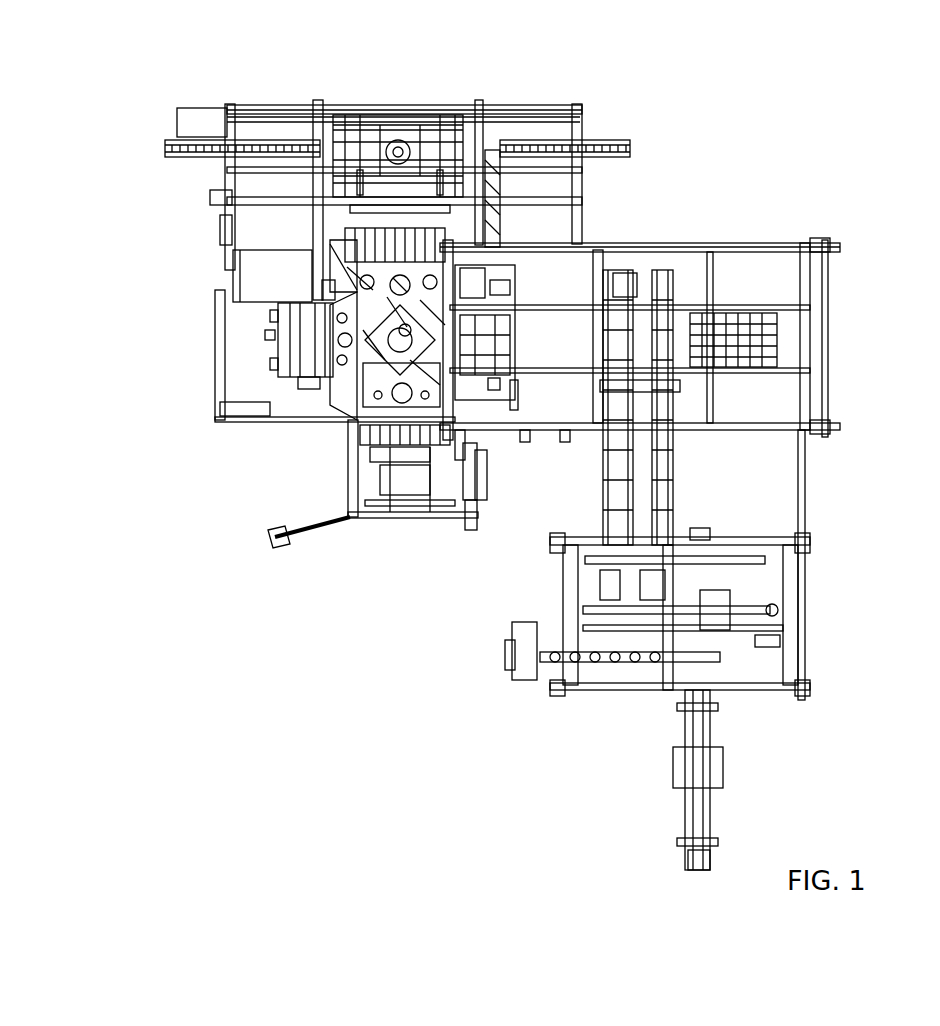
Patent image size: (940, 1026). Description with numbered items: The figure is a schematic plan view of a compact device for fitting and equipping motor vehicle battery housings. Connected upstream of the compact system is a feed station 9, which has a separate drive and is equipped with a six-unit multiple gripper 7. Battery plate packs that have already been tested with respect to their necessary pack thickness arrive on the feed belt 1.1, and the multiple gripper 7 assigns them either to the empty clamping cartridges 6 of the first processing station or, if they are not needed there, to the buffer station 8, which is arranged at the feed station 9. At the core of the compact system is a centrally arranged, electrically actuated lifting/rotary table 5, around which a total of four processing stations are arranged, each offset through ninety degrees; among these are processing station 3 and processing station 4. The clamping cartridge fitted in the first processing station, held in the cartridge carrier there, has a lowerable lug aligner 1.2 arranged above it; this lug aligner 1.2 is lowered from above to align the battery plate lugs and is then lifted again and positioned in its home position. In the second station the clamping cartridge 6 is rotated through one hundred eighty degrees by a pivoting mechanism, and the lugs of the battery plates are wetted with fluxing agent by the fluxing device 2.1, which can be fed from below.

The feed belt 1.1 is at (617, 483).
The lowerable lug aligner 1.2 is at (471, 530).
The fluxing device 2.1 is at (403, 480).
The processing station 3 is at (258, 277).
The processing station 4 is at (405, 138).
The lifting/rotary table 5 is at (363, 345).
The clamping cartridges 6 is at (445, 243).
The multiple gripper 7 is at (507, 330).
The buffer station 8 is at (717, 313).
The feed station 9 is at (742, 651).